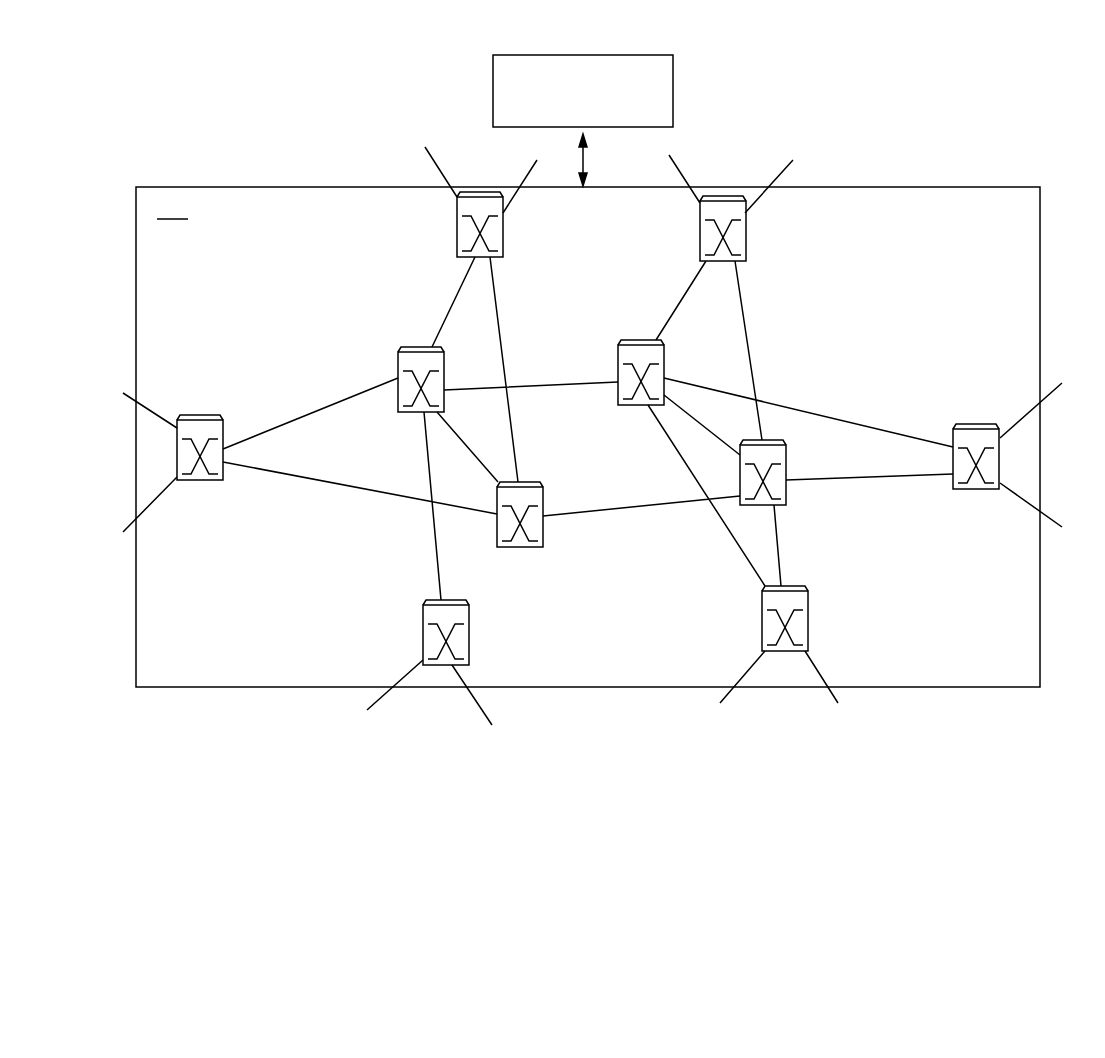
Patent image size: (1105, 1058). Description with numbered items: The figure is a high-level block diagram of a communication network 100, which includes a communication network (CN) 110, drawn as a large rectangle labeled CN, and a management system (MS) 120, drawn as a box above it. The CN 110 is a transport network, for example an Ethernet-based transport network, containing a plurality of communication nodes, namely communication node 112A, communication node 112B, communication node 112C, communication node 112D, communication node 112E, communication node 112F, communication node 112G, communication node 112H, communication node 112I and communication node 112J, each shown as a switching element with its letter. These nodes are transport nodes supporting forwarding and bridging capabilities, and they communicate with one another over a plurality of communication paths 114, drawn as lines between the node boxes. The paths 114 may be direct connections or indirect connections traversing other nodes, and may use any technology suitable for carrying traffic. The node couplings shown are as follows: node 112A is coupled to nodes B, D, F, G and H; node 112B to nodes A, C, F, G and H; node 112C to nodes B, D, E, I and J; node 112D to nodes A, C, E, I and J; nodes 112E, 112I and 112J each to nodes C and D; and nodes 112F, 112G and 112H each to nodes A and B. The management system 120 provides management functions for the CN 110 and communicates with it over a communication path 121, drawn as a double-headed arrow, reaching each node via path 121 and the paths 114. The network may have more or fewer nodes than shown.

The communication network 100 is at (681, 740).
The communication network (CN) 110 is at (885, 187).
The communication node A 112A is at (544, 492).
The communication node B 112B is at (408, 346).
The communication node C 112C is at (665, 361).
The communication node D 112D is at (787, 457).
The communication node E 112E is at (747, 229).
The communication node F 112F is at (470, 624).
The communication node G 112G is at (504, 224).
The communication node H 112H is at (201, 415).
The communication node I 112I is at (809, 604).
The communication node J 112J is at (980, 423).
The communication paths (CPs) 114 is at (352, 397).
The management system (MS) 120 is at (675, 88).
The communication path (CP) 121 is at (584, 150).